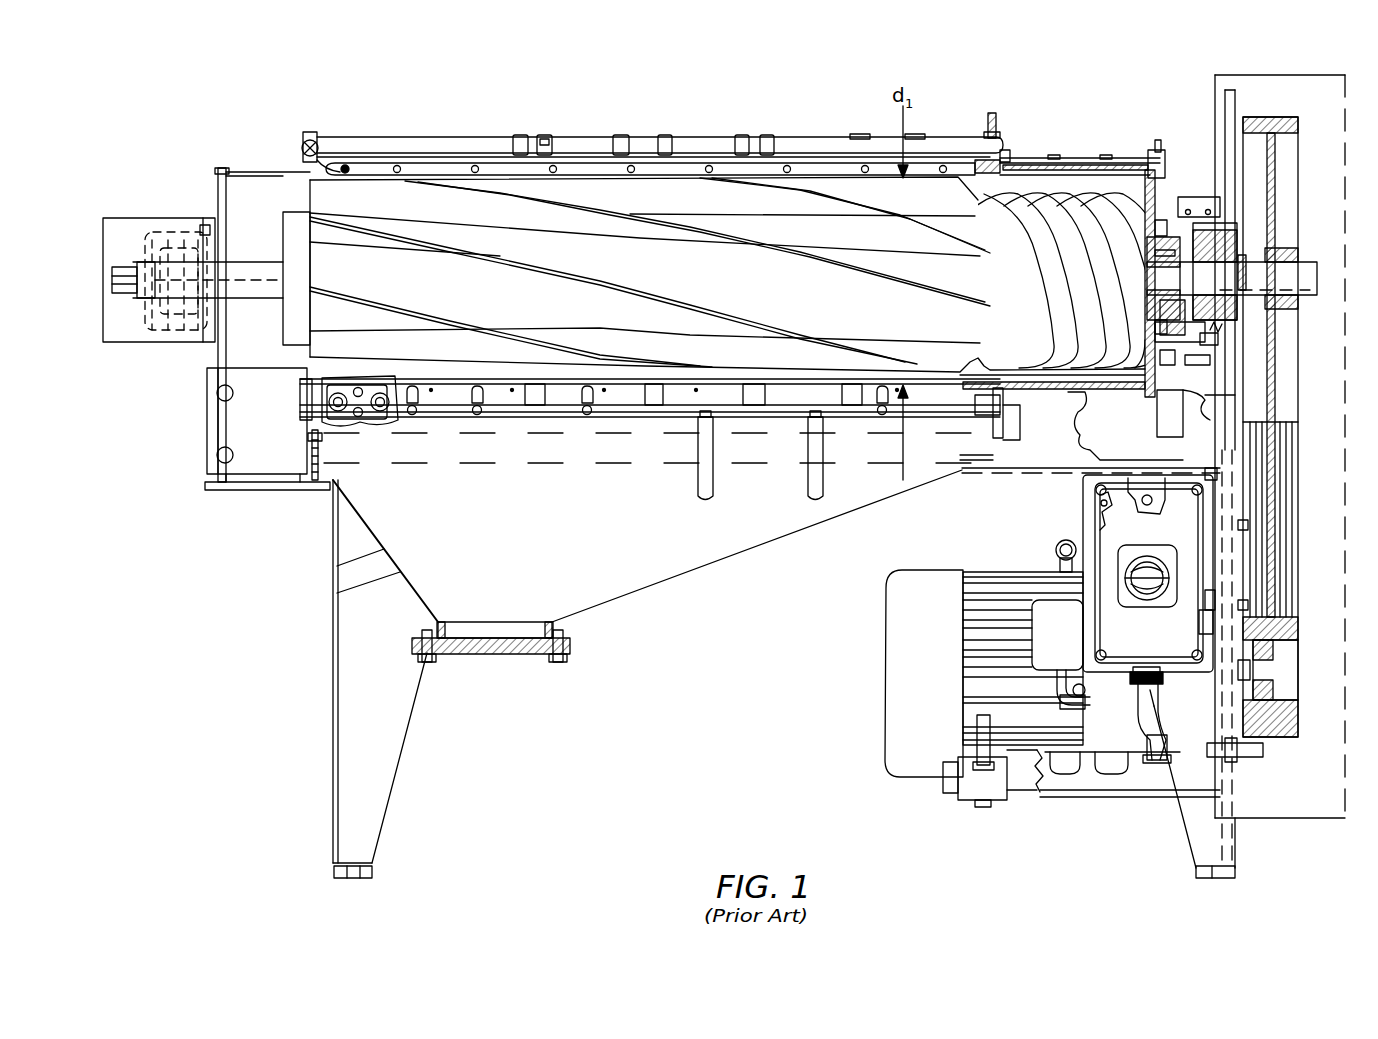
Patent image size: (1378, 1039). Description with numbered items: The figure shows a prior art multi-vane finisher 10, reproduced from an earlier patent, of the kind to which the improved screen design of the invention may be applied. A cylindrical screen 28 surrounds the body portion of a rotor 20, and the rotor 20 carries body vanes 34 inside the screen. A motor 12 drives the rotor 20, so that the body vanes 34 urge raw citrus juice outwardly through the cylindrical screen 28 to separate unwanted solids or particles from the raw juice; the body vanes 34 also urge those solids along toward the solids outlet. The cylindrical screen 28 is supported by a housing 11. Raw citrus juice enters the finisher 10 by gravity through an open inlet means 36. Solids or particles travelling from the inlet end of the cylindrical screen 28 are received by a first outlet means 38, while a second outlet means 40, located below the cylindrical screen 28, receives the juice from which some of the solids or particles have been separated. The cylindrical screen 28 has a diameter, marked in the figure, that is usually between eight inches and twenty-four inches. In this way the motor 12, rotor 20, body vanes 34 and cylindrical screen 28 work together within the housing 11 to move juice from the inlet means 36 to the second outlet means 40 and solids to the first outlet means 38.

The multi-vane finisher 10 is at (160, 104).
The housing 11 is at (280, 158).
The motor 12 is at (917, 642).
The rotor 20 is at (311, 194).
The cylindrical screen 28 is at (830, 176).
The body vanes 34 is at (567, 220).
The inlet means 36 is at (1032, 138).
The first outlet means 38 is at (218, 355).
The second outlet means 40 is at (617, 563).